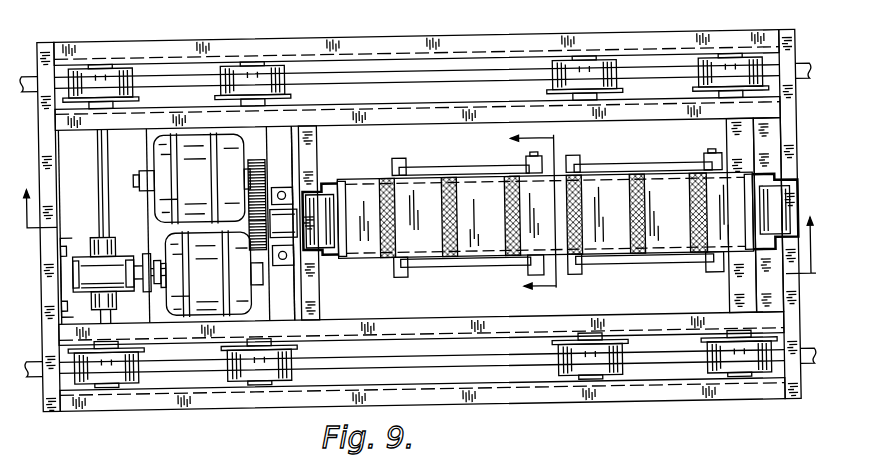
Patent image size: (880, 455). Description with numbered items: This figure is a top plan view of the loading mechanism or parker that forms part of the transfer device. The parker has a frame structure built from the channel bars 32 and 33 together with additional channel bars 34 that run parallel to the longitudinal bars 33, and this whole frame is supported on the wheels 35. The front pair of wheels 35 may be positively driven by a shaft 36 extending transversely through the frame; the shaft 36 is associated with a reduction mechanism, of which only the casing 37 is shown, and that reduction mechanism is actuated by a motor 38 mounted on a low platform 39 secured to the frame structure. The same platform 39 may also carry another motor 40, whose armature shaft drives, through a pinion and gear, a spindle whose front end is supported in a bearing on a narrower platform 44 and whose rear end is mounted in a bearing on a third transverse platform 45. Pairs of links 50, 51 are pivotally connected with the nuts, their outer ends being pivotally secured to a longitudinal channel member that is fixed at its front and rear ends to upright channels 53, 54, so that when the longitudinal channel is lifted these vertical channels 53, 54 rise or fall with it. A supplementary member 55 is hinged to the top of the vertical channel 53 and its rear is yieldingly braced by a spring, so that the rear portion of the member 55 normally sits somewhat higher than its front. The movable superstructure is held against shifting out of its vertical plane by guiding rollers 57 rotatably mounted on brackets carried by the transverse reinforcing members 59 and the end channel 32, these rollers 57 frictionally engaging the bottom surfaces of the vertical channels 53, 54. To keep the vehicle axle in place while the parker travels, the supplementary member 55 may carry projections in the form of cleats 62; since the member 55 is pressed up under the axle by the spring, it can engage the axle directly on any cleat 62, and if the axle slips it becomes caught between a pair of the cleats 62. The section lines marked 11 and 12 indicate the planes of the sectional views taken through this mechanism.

The section line 11- 11 is at (421, 221).
The section line 12- 12 is at (521, 216).
The channel bar 32 is at (50, 157).
The channel bar 33 is at (358, 46).
The channel bar 34 is at (404, 120).
The wheels 35 is at (556, 64).
The shaft 36 is at (100, 212).
The casing 37 is at (80, 250).
The motor 38 is at (235, 291).
The low platform 39 is at (158, 221).
The motor 40 is at (165, 158).
The platform 44 is at (296, 151).
The transverse platform 45 is at (747, 147).
The link 50 is at (456, 153).
The link 51 is at (612, 152).
The upright channel 53 is at (343, 168).
The upright channel 54 is at (771, 259).
The supplementary member 55 is at (432, 248).
The rollers 57 is at (341, 237).
The transverse reinforcing members 59 is at (313, 298).
The cleats 62 is at (582, 254).